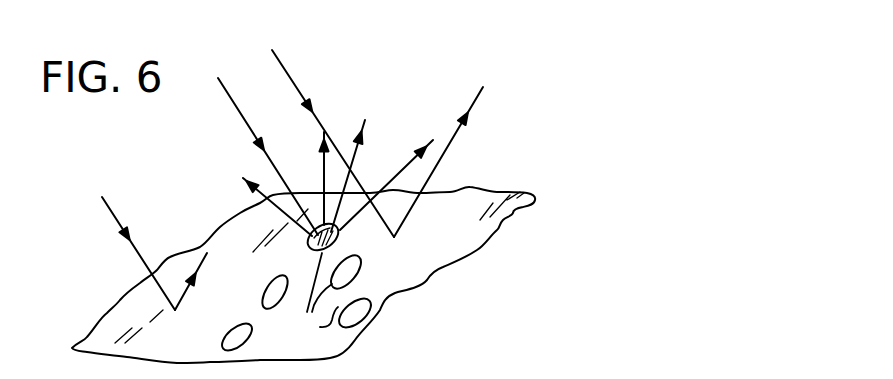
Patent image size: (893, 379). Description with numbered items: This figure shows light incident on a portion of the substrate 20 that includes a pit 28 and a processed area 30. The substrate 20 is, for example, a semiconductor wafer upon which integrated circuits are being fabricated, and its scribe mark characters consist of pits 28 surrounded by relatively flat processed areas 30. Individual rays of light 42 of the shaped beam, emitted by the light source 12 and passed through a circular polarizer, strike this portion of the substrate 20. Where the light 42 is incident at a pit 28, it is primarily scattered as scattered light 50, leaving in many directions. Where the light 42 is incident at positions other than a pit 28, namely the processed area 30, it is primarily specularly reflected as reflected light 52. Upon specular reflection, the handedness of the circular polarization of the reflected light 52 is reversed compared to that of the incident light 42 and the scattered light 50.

The light source 12 is at (359, 243).
The substrate 20 is at (443, 268).
The pit 28 is at (254, 339).
The processed area 30 is at (467, 234).
The light 42 is at (110, 207).
The scattered light 50 is at (266, 199).
The reflected light 52 is at (479, 98).